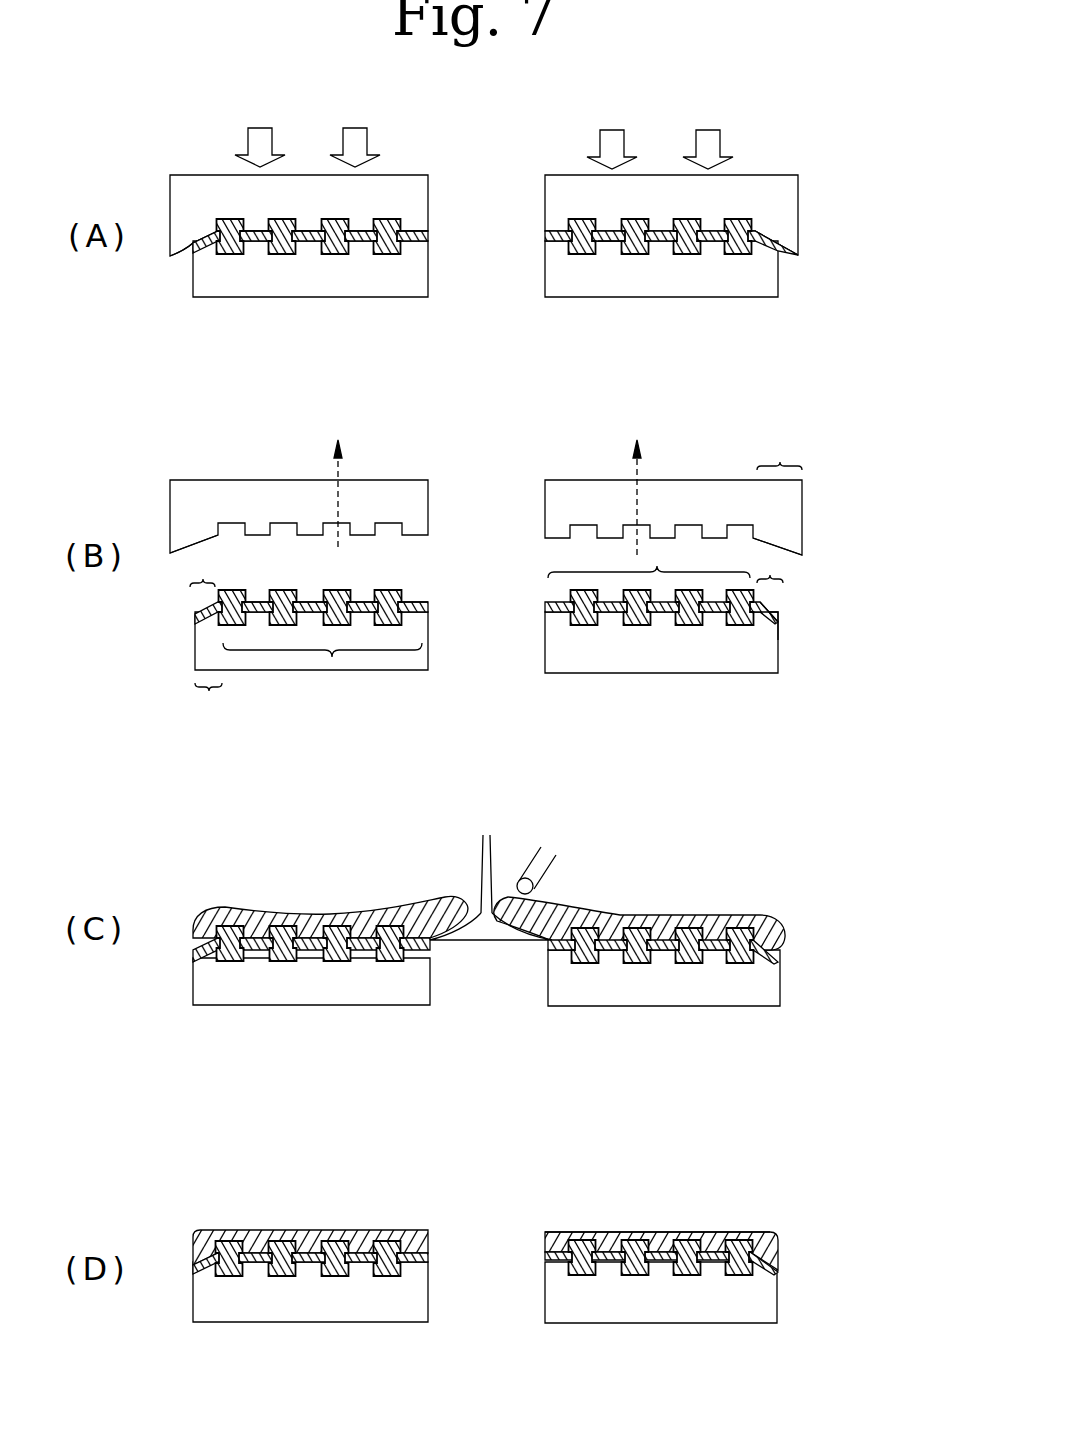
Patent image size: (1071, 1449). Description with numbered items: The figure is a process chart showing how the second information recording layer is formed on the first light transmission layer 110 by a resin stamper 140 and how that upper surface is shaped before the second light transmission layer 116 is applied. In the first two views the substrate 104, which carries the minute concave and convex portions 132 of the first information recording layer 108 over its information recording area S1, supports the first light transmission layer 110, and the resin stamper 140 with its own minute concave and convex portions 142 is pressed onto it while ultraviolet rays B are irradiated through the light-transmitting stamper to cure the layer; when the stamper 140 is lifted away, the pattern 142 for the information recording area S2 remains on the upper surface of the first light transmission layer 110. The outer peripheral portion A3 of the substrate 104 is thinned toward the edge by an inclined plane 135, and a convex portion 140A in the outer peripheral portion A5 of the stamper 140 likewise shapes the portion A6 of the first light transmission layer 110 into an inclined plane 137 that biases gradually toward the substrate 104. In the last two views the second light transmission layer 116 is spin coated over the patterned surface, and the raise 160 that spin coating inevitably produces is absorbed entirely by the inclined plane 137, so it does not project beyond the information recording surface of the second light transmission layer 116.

The substrate 104 is at (748, 287).
The first information recording layer 108 is at (612, 242).
The first light transmission layer 110 is at (635, 254).
The second light transmission layer 116 is at (658, 1237).
The minute concave and convex portions 132 is at (665, 242).
The inclined plane 135 is at (760, 627).
The inclined plane 137 is at (775, 610).
The resin stamper 140 is at (755, 187).
The convex portion 140A is at (793, 238).
The minute concave and convex portions 142 is at (665, 231).
The raise 160 is at (198, 1237).
The ultraviolet rays B is at (368, 142).
The outer peripheral portion A3 is at (209, 700).
The outer peripheral portion A5 is at (779, 456).
The portion A6 is at (828, 572).
The information recording area S1 is at (332, 657).
The information recording area S2 is at (649, 562).